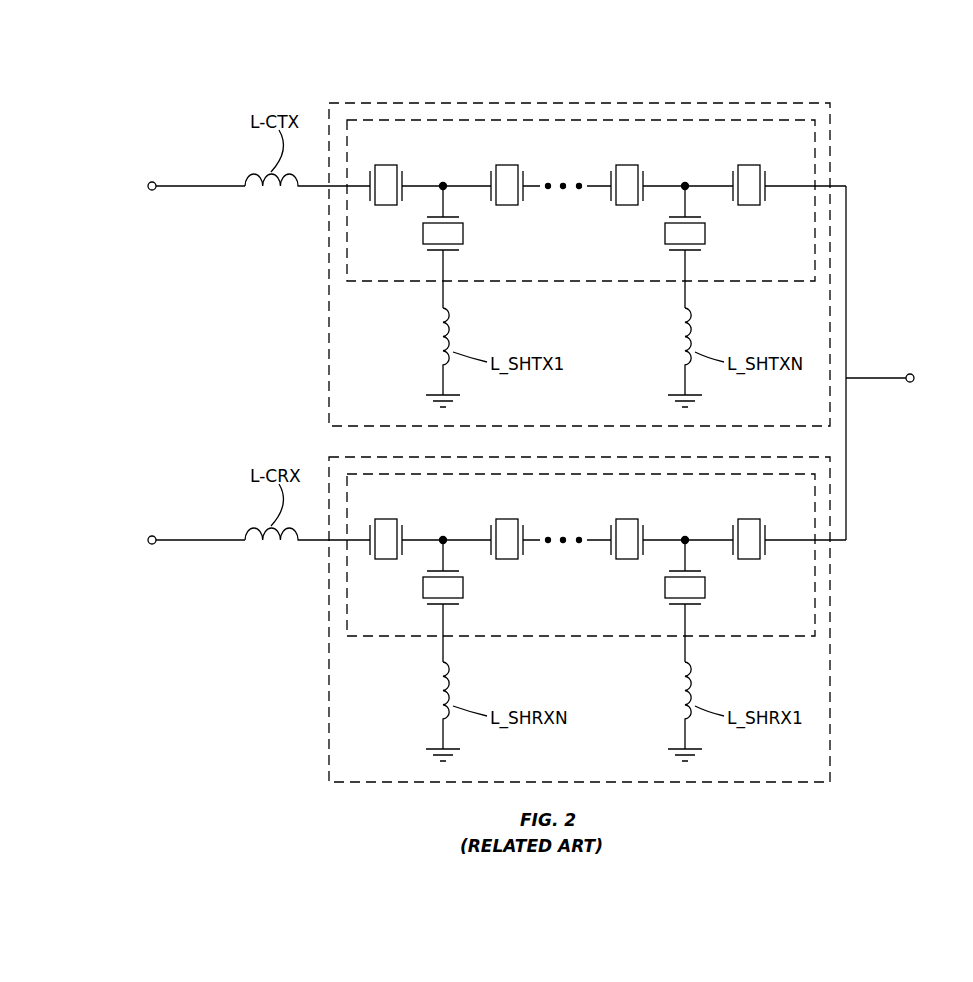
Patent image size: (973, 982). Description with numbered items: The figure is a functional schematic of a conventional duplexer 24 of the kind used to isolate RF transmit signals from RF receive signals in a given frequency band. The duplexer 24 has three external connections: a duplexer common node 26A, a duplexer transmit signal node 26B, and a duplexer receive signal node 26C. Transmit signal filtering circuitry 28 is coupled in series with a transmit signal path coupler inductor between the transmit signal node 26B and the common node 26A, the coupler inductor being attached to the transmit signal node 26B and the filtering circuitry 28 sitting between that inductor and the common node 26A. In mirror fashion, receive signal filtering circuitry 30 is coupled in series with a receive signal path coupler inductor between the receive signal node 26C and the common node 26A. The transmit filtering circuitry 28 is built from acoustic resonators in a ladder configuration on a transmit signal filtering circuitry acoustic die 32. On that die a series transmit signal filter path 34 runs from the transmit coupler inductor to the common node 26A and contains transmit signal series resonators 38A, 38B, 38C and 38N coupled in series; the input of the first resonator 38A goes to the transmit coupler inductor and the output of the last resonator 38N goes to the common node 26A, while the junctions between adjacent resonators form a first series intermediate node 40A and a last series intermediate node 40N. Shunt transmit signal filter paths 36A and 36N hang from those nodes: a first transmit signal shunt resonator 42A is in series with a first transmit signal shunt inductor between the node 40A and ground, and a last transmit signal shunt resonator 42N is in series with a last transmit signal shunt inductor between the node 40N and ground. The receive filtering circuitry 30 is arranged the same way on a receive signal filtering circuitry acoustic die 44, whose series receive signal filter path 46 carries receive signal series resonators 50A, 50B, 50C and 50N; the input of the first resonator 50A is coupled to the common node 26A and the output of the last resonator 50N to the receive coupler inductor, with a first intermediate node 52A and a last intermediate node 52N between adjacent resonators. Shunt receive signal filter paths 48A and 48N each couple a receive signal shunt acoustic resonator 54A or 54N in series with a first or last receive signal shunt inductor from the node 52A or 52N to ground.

The conventional duplexer 24 is at (802, 66).
The duplexer common node 26A is at (913, 373).
The duplexer transmit signal node 26B is at (150, 181).
The duplexer receive signal node 26C is at (150, 535).
The transmit signal filtering circuitry 28 is at (797, 415).
The receive signal filtering circuitry 30 is at (797, 769).
The transmit signal filtering circuitry acoustic die 32 is at (780, 273).
The series transmit signal filter path 34 is at (542, 211).
The shunt transmit signal filter path 36A is at (485, 315).
The shunt transmit signal filter path 36N is at (727, 315).
The first transmit signal series resonator 38A is at (386, 165).
The transmit signal series resonator 38B is at (507, 165).
The transmit signal series resonator 38C is at (627, 165).
The last transmit signal series resonator 38N is at (749, 165).
The first series intermediate node 40A is at (445, 184).
The last series intermediate node 40N is at (687, 184).
The first transmit signal shunt resonator 42A is at (463, 233).
The last transmit signal shunt resonator 42N is at (705, 233).
The receive signal filtering circuitry acoustic die 44 is at (789, 627).
The series receive signal filter path 46 is at (542, 565).
The shunt receive signal filter path 48A is at (727, 669).
The shunt receive signal filter path 48N is at (485, 669).
The first receive signal series resonator 50A is at (749, 519).
The receive signal series resonator 50B is at (627, 519).
The receive signal series resonator 50C is at (507, 519).
The last receive signal series resonator 50N is at (386, 519).
The first intermediate node 52A is at (687, 538).
The last intermediate node 52N is at (445, 538).
The first receive signal shunt acoustic resonator 54A is at (705, 587).
The last receive signal shunt acoustic resonator 54N is at (463, 587).